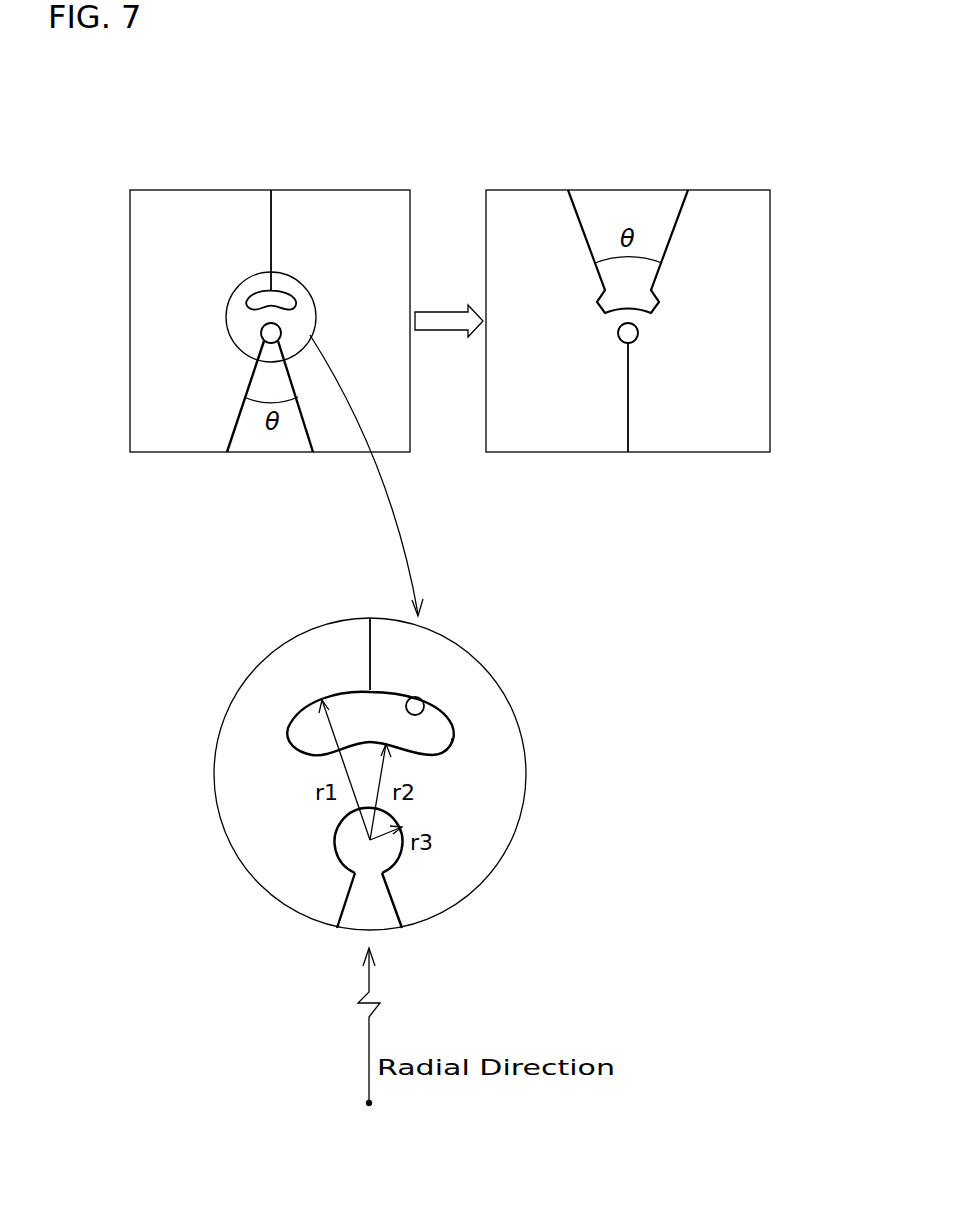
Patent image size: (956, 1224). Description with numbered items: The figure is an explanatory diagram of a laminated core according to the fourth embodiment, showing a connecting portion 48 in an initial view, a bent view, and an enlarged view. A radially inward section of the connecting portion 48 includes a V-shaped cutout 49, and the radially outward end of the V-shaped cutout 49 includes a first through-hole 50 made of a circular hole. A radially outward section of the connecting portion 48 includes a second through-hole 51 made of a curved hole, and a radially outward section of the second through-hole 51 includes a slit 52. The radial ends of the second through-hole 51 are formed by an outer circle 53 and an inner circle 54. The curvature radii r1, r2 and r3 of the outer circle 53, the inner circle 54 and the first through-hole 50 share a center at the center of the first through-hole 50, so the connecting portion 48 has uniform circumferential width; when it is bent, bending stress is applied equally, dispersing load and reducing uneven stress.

The connecting portion 48 is at (270, 313).
The V-shaped cutout 49 is at (305, 430).
The first through-hole 50 is at (264, 339).
The second through-hole 51 is at (275, 296).
The slit 52 is at (271, 236).
The outer circle 53 is at (424, 712).
The inner circle 54 is at (445, 745).